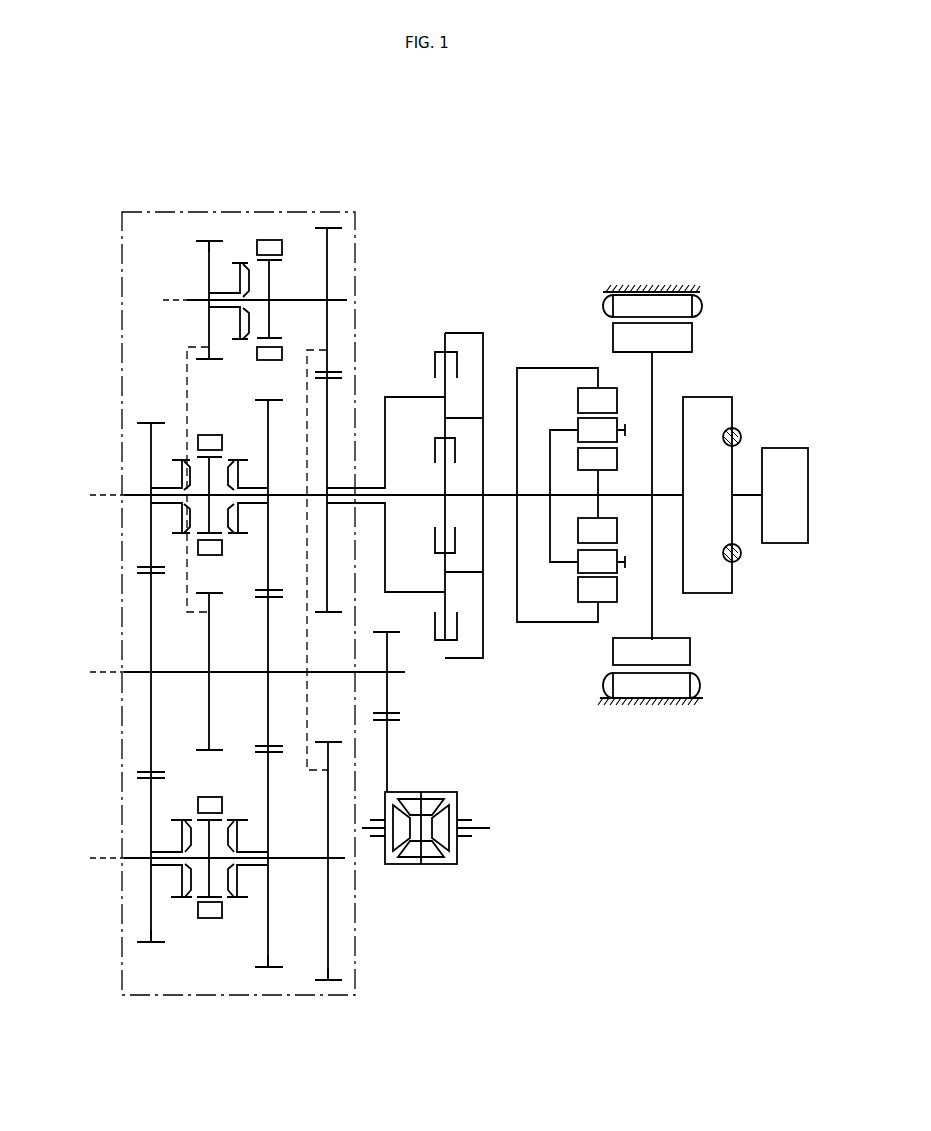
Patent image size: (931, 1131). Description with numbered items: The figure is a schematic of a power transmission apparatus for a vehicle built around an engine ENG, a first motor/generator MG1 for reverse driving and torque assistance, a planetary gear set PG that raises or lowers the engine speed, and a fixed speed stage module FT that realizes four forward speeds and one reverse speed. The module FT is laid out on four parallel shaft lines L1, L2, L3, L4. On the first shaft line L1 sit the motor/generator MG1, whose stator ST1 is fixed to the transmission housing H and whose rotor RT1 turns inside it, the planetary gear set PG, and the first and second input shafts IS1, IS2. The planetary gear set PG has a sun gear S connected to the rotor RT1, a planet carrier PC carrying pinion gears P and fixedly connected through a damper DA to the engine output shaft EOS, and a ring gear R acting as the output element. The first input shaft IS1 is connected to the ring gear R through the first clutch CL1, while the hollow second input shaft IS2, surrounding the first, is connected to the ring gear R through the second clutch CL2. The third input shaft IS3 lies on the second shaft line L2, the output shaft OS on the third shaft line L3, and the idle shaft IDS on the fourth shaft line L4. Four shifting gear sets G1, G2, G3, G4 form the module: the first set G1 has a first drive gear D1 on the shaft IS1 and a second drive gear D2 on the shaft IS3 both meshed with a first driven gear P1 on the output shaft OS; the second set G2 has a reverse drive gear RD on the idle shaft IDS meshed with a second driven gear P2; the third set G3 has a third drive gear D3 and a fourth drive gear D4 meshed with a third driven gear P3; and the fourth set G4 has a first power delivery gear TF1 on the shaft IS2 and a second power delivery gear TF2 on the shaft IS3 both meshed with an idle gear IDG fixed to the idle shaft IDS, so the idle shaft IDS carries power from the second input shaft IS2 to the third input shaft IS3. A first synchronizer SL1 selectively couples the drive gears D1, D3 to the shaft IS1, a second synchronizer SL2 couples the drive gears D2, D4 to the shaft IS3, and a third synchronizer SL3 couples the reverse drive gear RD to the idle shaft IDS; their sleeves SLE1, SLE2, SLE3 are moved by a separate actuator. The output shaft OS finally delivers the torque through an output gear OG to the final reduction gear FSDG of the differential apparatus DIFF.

The fixed speed stage module FT is at (350, 207).
The first shaft line L1 is at (412, 496).
The second shaft line L2 is at (203, 859).
The third shaft line L3 is at (233, 672).
The fourth shaft line L4 is at (241, 301).
The first shifting gear set G1 is at (146, 949).
The second shifting gear set G2 is at (209, 237).
The third shifting gear set G3 is at (268, 976).
The fourth shifting gear set G4 is at (329, 988).
The first synchronizer SL1 is at (211, 431).
The second synchronizer SL2 is at (200, 923).
The third synchronizer SL3 is at (260, 234).
The first sleeve SLE1 is at (214, 436).
The second sleeve SLE2 is at (218, 920).
The third sleeve SLE3 is at (273, 241).
The reverse drive gear RD is at (207, 268).
The idle gear IDG is at (329, 252).
The idle shaft IDS is at (333, 303).
The first power delivery gear TF1 is at (329, 400).
The second power delivery gear TF2 is at (341, 952).
The first drive gear D1 is at (150, 450).
The second drive gear D2 is at (150, 925).
The third drive gear D3 is at (270, 458).
The fourth drive gear D4 is at (270, 920).
The first driven gear P1 is at (150, 630).
The second driven gear P2 is at (208, 700).
The third driven gear P3 is at (268, 618).
The output shaft OS is at (240, 676).
The first input shaft IS1 is at (410, 493).
The second input shaft IS2 is at (370, 503).
The third input shaft IS3 is at (296, 862).
The first clutch CL1 is at (459, 421).
The second clutch CL2 is at (453, 340).
The planetary gear set PG is at (581, 365).
The planet carrier PC is at (563, 429).
The ring gear R is at (597, 465).
The pinion gears P is at (601, 495).
The sun gear S is at (597, 525).
The transmission housing H is at (658, 286).
The stator ST1 is at (652, 306).
The rotor RT1 is at (652, 481).
The first motor/generator MG1 is at (704, 295).
The damper DA is at (739, 432).
The engine ENG is at (785, 495).
The engine output shaft EOS is at (752, 497).
The output gear OG is at (387, 697).
The final reduction gear FSDG is at (387, 757).
The differential apparatus DIFF is at (457, 800).